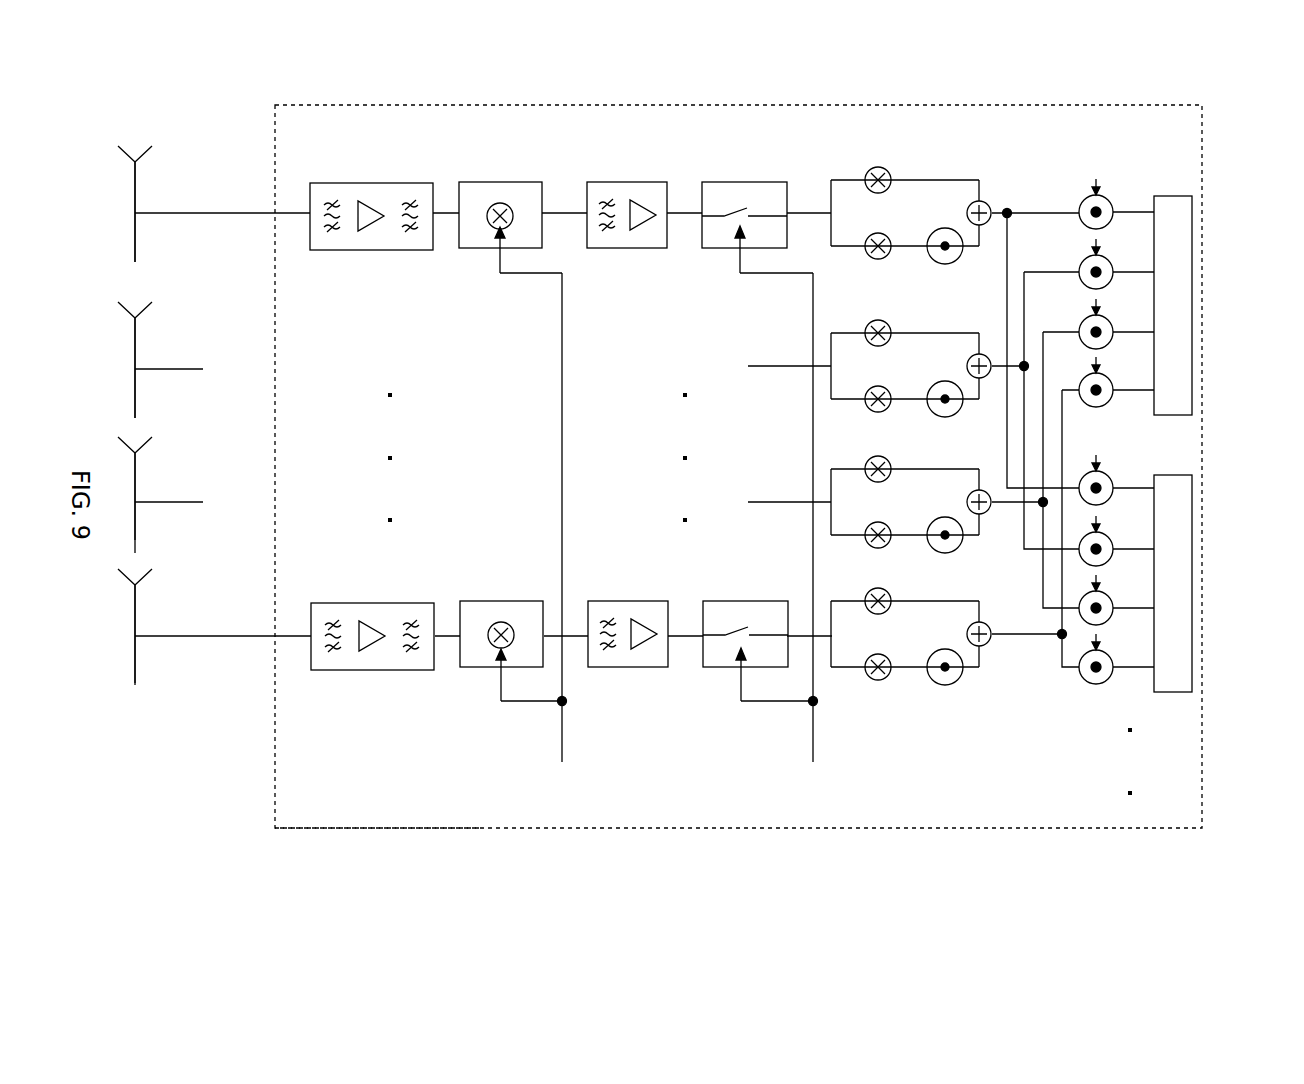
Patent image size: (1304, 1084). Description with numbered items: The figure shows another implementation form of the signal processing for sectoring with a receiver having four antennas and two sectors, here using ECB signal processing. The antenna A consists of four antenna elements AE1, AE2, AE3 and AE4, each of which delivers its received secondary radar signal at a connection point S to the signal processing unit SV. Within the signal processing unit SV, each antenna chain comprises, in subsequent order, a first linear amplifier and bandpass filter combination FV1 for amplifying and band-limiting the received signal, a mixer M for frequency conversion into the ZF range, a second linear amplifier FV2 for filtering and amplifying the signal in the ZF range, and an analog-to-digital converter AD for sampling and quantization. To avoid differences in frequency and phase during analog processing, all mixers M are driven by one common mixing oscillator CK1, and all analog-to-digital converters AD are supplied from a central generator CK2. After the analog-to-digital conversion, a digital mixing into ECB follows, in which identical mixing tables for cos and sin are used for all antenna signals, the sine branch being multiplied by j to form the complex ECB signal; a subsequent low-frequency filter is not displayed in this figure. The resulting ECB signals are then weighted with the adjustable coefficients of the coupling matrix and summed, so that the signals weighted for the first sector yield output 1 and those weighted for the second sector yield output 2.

The antenna element AE1 is at (222, 187).
The antenna element AE2 is at (161, 360).
The antenna element AE3 is at (161, 495).
The antenna element AE4 is at (214, 627).
The connection point S is at (135, 217).
The antenna A is at (135, 700).
The first linear amplifier and bandpass filter combination FV1 is at (402, 190).
The mixer M is at (523, 190).
The second linear amplifier FV2 is at (658, 190).
The analog-to-digital converter AD is at (772, 190).
The ECB mixing ECB is at (930, 128).
The cosine mixing table cos is at (877, 421).
The sine mixing table sin is at (874, 493).
The imaginary unit multiplication j is at (945, 695).
The mixing oscillator CK1 is at (543, 518).
The central generator CK2 is at (785, 518).
The signal processing unit SV is at (477, 817).
The sector 1 is at (1192, 307).
The sector 2 is at (1192, 583).